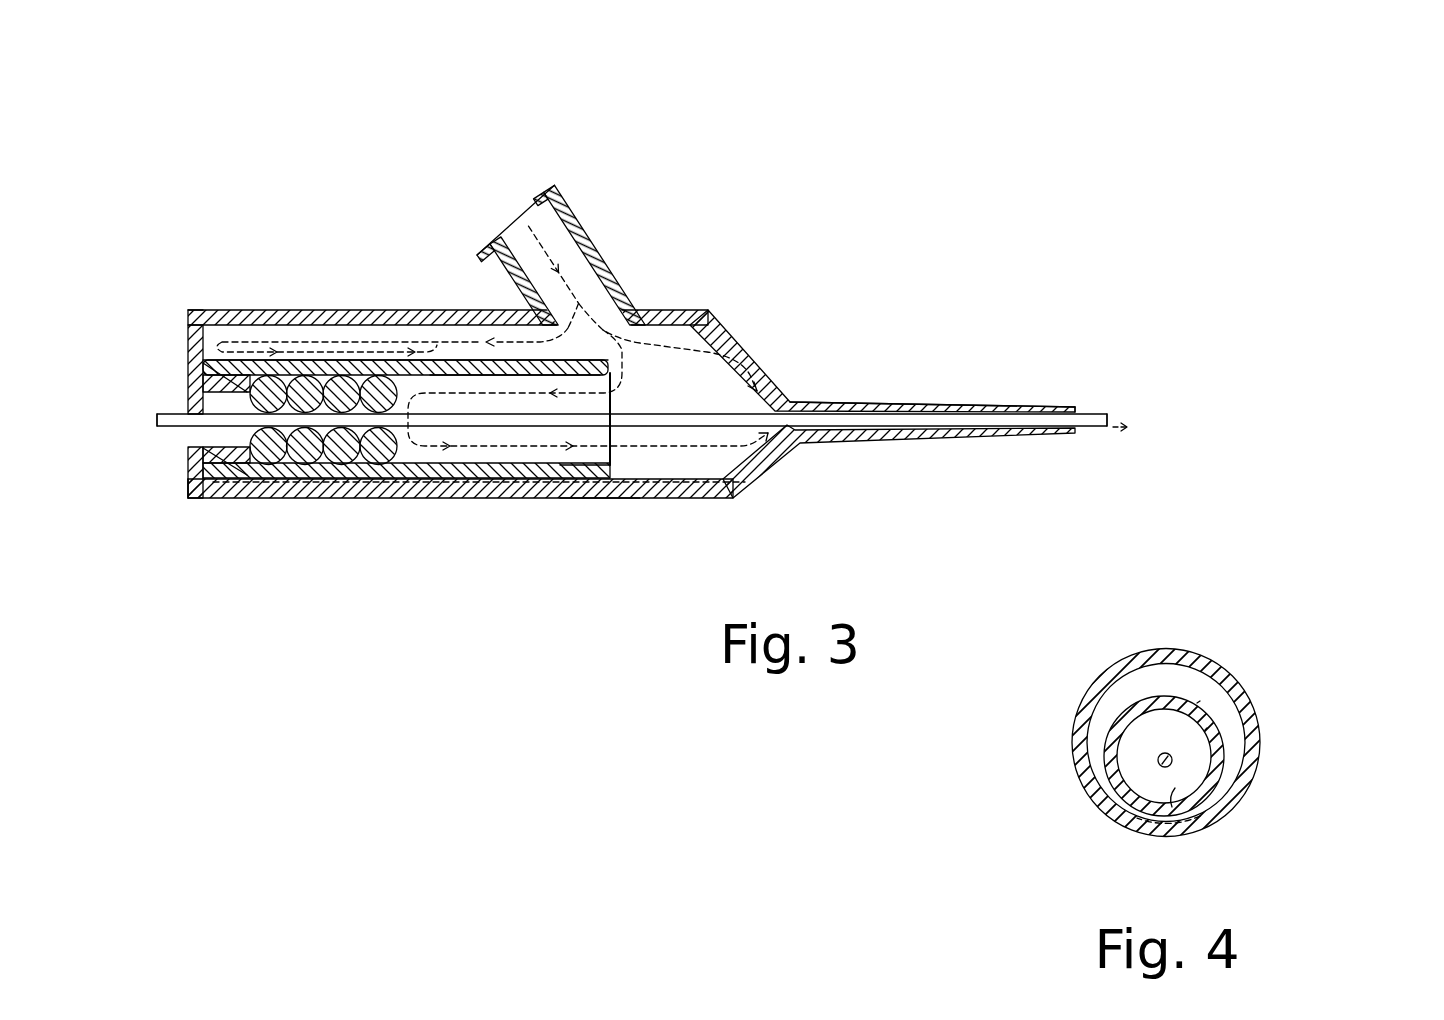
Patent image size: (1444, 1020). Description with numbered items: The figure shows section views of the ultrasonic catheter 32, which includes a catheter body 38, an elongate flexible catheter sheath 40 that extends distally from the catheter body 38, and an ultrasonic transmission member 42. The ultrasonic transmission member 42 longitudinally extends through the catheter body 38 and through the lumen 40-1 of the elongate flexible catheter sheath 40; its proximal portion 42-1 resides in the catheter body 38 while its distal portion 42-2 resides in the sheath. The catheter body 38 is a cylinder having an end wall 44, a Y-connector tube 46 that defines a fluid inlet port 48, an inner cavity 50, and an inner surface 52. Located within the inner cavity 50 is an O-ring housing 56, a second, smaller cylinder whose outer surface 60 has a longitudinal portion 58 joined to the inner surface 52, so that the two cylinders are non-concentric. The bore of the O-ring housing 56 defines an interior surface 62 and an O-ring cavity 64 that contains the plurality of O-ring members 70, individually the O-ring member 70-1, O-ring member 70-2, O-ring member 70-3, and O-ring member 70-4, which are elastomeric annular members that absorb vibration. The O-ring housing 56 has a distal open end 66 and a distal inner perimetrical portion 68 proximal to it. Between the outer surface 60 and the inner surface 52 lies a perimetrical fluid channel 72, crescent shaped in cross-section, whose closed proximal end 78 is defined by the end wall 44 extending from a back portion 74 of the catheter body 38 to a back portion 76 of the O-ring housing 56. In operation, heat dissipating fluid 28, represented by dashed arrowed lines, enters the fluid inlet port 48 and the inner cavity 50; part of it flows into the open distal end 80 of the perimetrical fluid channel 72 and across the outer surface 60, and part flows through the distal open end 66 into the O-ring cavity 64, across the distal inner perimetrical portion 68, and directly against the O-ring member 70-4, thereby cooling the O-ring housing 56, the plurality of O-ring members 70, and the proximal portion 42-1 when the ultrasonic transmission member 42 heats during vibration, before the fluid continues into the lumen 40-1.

In FIG. 3, the heat dissipating fluid 28 is at (250, 317).
In FIG. 3, the ultrasonic catheter 32 is at (241, 148).
In FIG. 4, the ultrasonic catheter 32 is at (1376, 601).
In FIG. 3, the catheter body 38 is at (458, 310).
In FIG. 4, the catheter body 38 is at (1260, 738).
In FIG. 3, the elongate flexible catheter sheath 40 is at (937, 406).
In FIG. 3, the lumen 40-1 is at (1099, 400).
In FIG. 3, the ultrasonic transmission member 42 is at (158, 394).
In FIG. 4, the ultrasonic transmission member 42 is at (1160, 762).
In FIG. 3, the proximal portion 42-1 is at (168, 427).
In FIG. 3, the distal portion 42-2 is at (1085, 427).
In FIG. 3, the end wall 44 is at (187, 463).
In FIG. 3, the Y-connector tube 46 is at (600, 242).
In FIG. 3, the fluid inlet port 48 is at (500, 236).
In FIG. 3, the inner cavity 50 is at (669, 396).
In FIG. 3, the inner surface 52 is at (273, 318).
In FIG. 4, the inner surface 52 is at (1125, 682).
In FIG. 3, the O-ring housing 56 is at (366, 338).
In FIG. 4, the O-ring housing 56 is at (1165, 680).
In FIG. 3, the longitudinal portion 58 is at (588, 426).
In FIG. 3, the outer surface 60 is at (408, 333).
In FIG. 4, the outer surface 60 is at (1197, 703).
In FIG. 3, the interior surface 62 is at (432, 378).
In FIG. 4, the interior surface 62 is at (1207, 728).
In FIG. 3, the O-ring cavity 64 is at (463, 406).
In FIG. 4, the O-ring cavity 64 is at (1116, 766).
In FIG. 3, the distal open end 66 is at (613, 392).
In FIG. 3, the distal inner perimetrical portion 68 is at (587, 497).
In FIG. 3, the plurality of O-ring members 70 is at (200, 545).
In FIG. 3, the O-ring member 70-1 is at (272, 460).
In FIG. 3, the O-ring member 70-2 is at (312, 460).
In FIG. 3, the O-ring member 70-3 is at (348, 460).
In FIG. 3, the O-ring member 70-4 is at (392, 462).
In FIG. 4, the O-ring member 70-4 is at (1180, 810).
In FIG. 3, the perimetrical fluid channel 72 is at (444, 356).
In FIG. 4, the perimetrical fluid channel 72 is at (1095, 726).
In FIG. 3, the back portion 74 is at (190, 292).
In FIG. 3, the back portion 76 is at (178, 375).
In FIG. 3, the closed proximal end 78 is at (185, 338).
In FIG. 3, the open distal end 80 is at (615, 343).